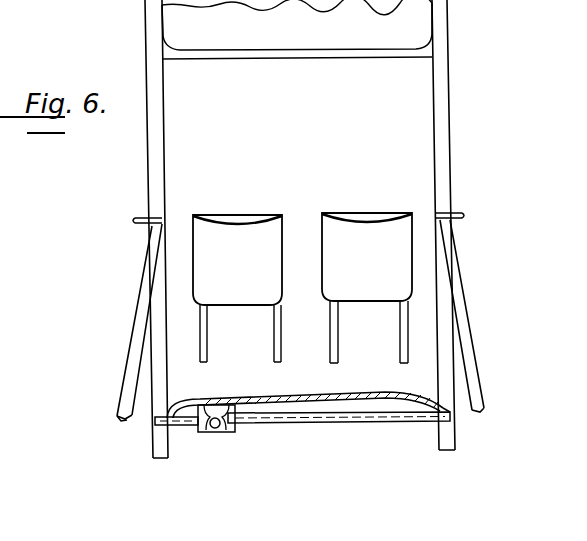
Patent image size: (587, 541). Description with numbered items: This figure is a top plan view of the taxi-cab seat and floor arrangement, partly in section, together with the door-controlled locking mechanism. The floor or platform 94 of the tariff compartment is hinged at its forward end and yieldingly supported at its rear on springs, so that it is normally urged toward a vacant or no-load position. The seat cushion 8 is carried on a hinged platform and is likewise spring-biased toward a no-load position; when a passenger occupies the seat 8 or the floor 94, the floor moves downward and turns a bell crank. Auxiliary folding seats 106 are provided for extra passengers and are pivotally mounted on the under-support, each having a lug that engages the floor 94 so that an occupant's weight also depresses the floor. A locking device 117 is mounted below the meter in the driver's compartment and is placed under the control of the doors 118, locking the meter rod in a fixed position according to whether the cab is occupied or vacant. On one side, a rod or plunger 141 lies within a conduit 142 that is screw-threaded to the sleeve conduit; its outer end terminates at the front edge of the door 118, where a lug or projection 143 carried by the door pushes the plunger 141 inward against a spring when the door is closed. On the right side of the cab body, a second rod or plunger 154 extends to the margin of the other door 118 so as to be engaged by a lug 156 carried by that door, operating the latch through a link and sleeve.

The seat cushion 8 is at (299, 34).
The floor or platform 94 is at (284, 109).
The auxiliary folding seats 106 is at (250, 272).
The doors 118 is at (131, 346).
The rod or plunger 141 is at (170, 413).
The conduit 142 is at (185, 426).
The locking device 117 is at (213, 434).
The lug or projection 143 is at (123, 424).
The lug 156 is at (468, 417).
The rod or plunger 154 is at (450, 412).